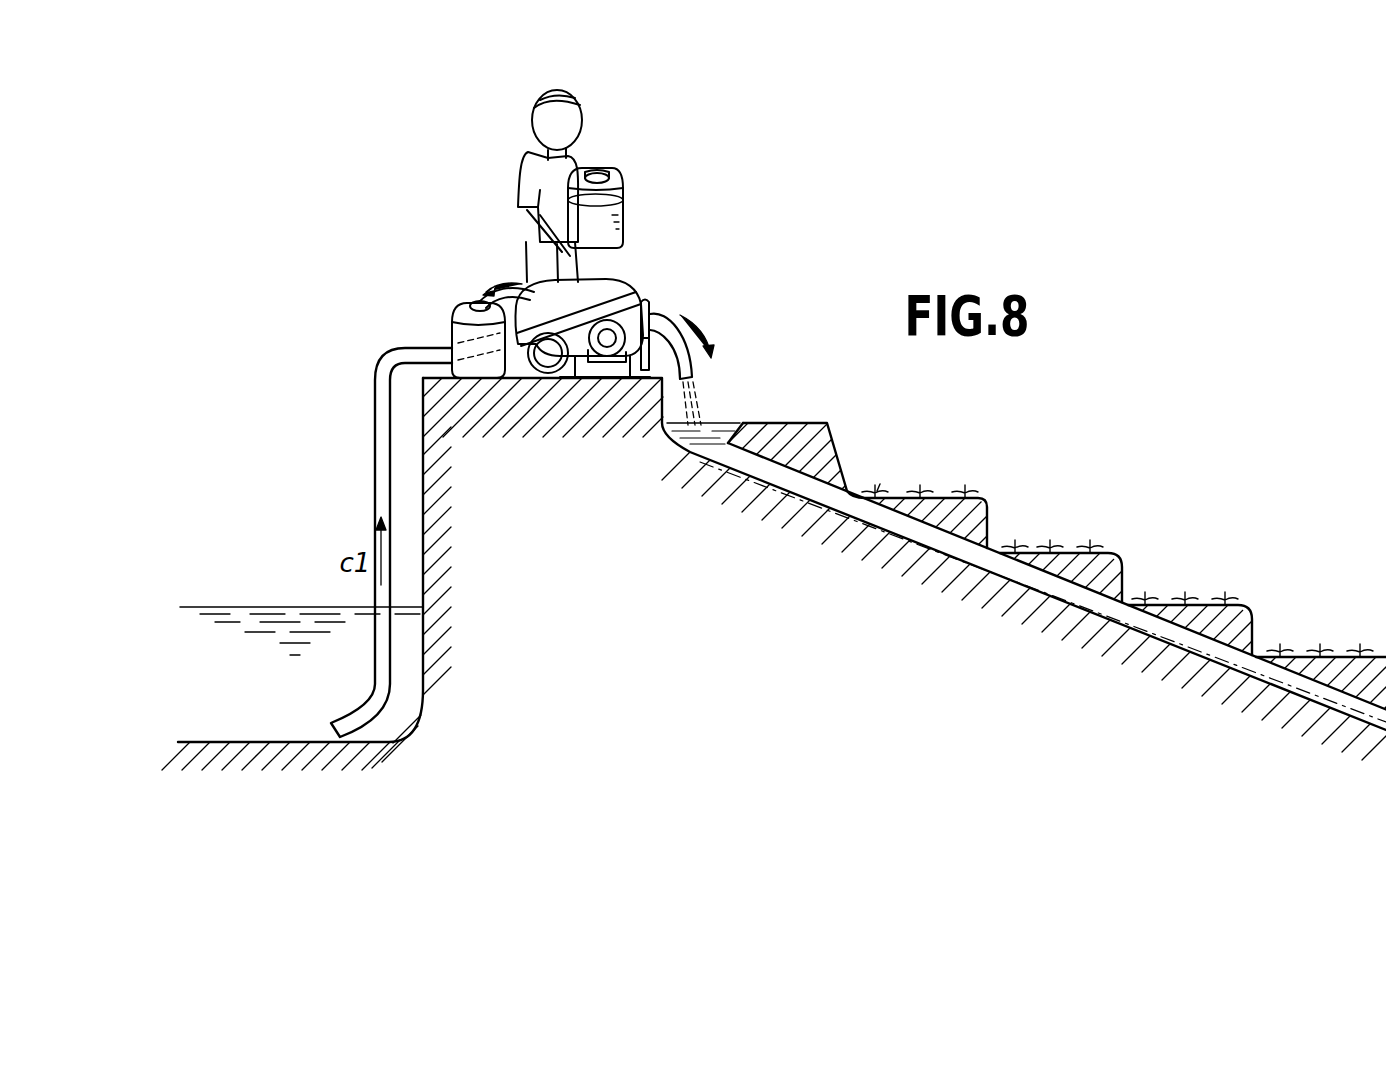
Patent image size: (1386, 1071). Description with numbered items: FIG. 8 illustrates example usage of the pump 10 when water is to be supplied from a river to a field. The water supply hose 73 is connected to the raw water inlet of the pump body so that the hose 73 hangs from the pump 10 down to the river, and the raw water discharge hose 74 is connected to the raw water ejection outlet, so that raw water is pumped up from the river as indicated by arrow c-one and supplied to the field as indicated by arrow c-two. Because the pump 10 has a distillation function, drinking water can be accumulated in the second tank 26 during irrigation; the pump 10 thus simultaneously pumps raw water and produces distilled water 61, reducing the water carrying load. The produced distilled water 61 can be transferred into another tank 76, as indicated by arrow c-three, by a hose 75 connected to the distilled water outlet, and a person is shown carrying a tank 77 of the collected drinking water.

The pump 10 is at (605, 268).
The second tank 26 is at (610, 290).
The distilled water 61 is at (623, 193).
The water supply hose 73 is at (398, 376).
The raw water discharge hose 74 is at (658, 318).
The hose 75 is at (480, 305).
The another tank 76 is at (462, 312).
The portable tank 77 is at (608, 168).